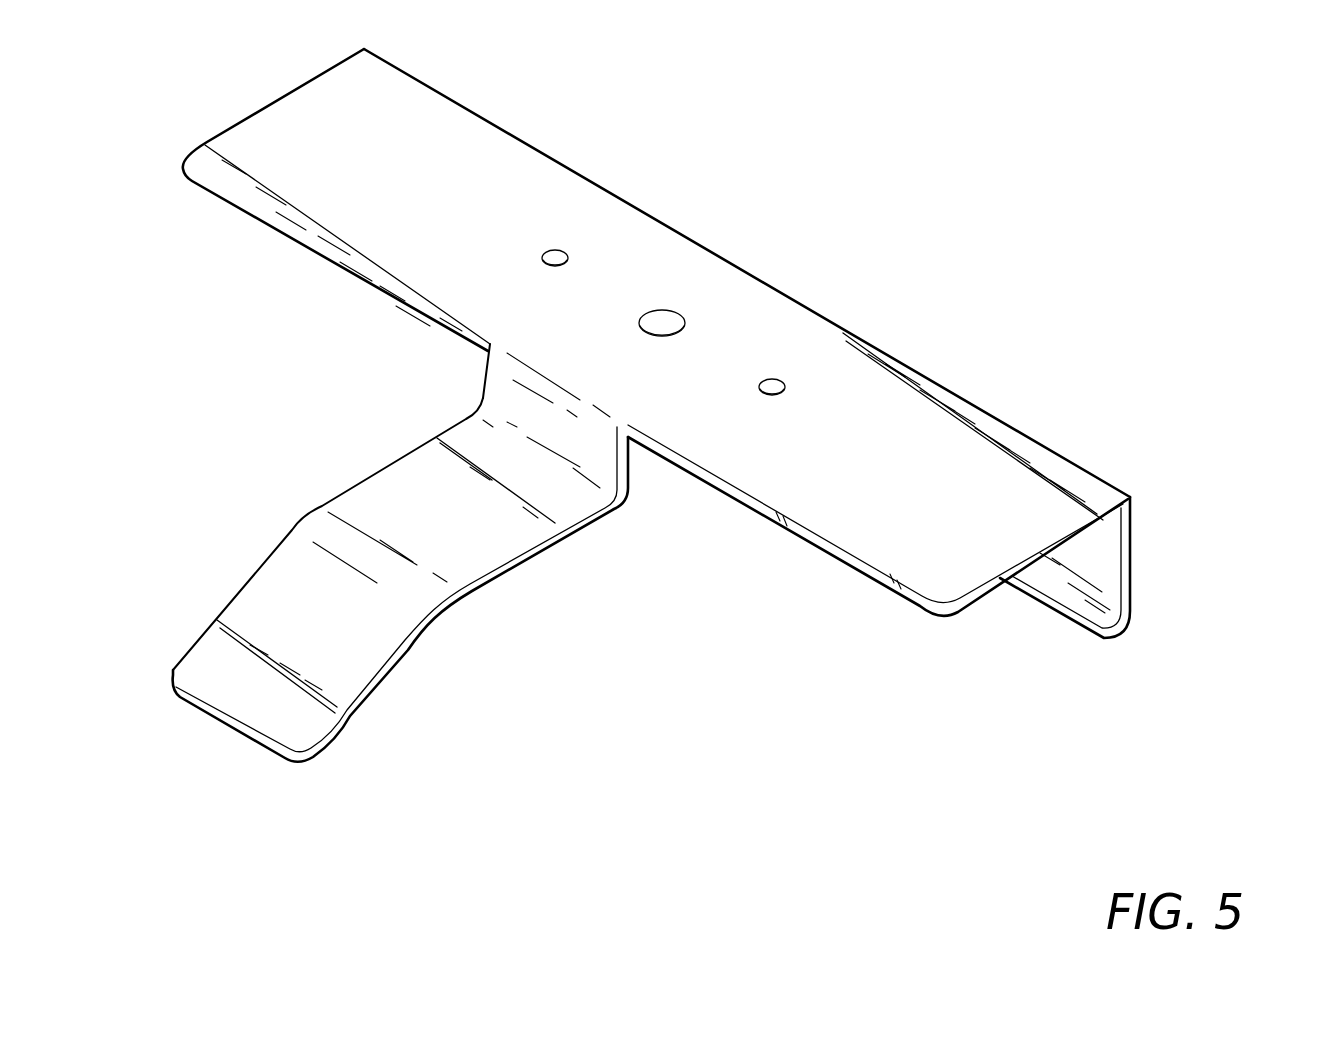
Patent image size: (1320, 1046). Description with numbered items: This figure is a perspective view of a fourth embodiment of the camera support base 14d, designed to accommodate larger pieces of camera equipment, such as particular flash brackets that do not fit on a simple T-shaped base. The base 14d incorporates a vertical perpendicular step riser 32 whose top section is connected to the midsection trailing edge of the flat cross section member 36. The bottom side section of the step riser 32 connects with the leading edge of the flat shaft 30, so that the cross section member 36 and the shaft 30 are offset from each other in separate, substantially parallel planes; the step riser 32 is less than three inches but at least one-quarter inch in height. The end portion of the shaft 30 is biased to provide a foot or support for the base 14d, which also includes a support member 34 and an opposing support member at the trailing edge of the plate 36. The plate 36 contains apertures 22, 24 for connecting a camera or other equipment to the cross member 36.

The camera support base 14d is at (360, 440).
The aperture 22 is at (665, 317).
The aperture 24 is at (555, 256).
The flat shaft 30 is at (525, 563).
The step riser 32 is at (481, 385).
The support member 34 is at (1135, 553).
The flat cross section member 36 is at (950, 398).